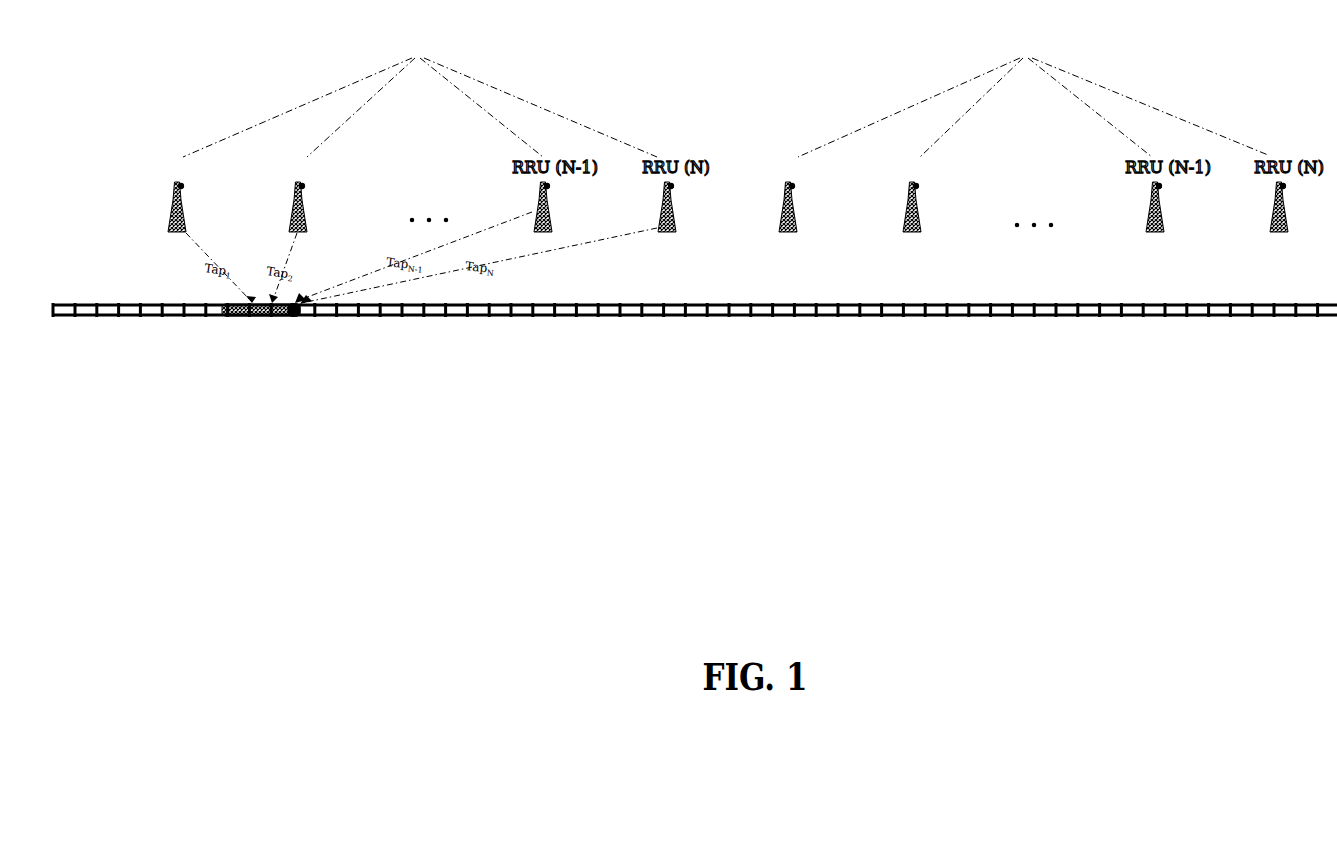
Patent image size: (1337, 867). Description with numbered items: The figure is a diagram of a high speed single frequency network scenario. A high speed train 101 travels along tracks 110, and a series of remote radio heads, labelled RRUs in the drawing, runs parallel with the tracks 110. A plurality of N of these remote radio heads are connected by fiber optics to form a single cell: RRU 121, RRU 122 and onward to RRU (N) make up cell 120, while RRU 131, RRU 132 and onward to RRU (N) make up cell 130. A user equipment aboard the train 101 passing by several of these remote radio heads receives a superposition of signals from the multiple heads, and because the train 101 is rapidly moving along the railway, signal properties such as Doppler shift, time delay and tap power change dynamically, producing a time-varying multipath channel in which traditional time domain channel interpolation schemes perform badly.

The high speed train 101 is at (297, 326).
The tracks 110 is at (948, 324).
The cell 120 is at (420, 96).
The cell 130 is at (1033, 96).
The RRU 121 is at (191, 194).
The RRU 122 is at (314, 194).
The RRU 131 is at (802, 194).
The RRU 132 is at (927, 194).